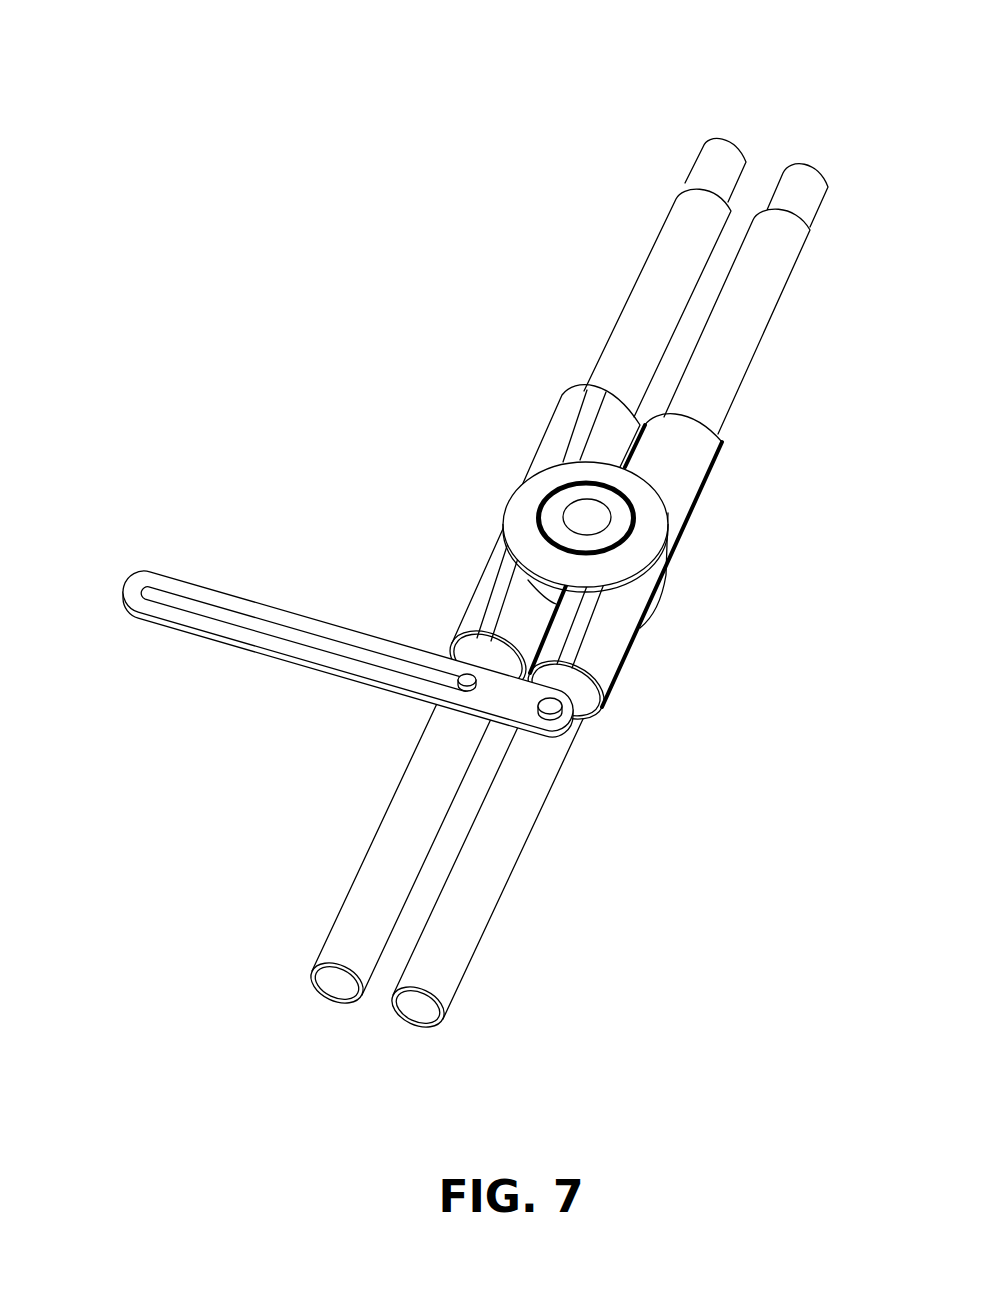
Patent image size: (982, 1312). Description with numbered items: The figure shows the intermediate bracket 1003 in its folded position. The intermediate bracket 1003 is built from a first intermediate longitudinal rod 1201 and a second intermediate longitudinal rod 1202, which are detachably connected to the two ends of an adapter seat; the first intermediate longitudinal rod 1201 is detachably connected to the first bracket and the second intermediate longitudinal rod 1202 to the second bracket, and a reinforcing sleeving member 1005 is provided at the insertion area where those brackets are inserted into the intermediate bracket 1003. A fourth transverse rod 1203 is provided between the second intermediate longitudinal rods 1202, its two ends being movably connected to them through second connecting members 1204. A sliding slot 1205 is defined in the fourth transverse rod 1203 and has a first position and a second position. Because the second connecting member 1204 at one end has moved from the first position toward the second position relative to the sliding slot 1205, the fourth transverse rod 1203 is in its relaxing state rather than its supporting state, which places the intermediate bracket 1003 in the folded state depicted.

The intermediate bracket 1003 is at (432, 521).
The reinforcing sleeving member 1005 is at (488, 610).
The first intermediate longitudinal rod 1201 is at (755, 318).
The second intermediate longitudinal rod 1202 is at (473, 895).
The fourth transverse rod 1203 is at (305, 551).
The second connecting member 1204 is at (567, 731).
The sliding slot 1205 is at (352, 655).